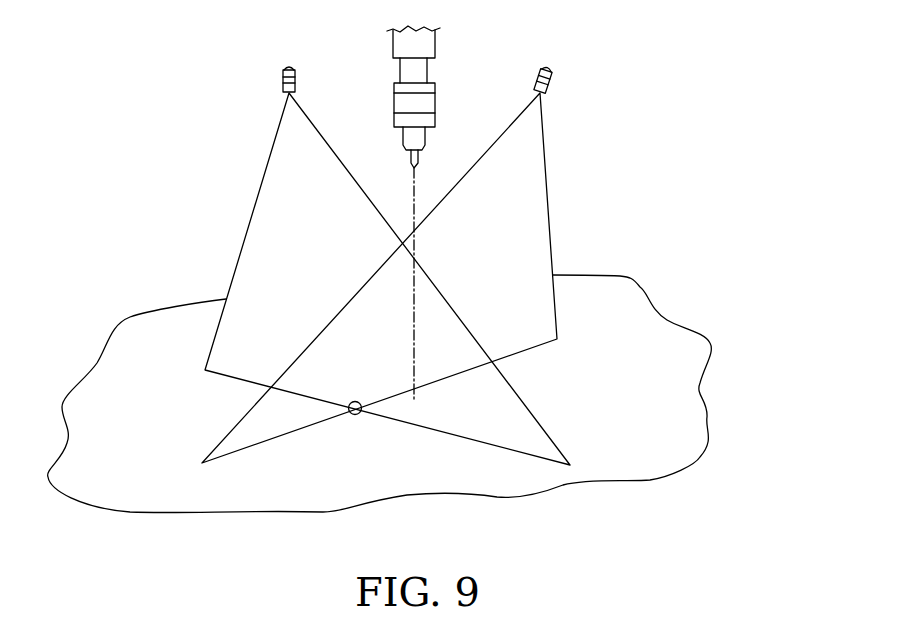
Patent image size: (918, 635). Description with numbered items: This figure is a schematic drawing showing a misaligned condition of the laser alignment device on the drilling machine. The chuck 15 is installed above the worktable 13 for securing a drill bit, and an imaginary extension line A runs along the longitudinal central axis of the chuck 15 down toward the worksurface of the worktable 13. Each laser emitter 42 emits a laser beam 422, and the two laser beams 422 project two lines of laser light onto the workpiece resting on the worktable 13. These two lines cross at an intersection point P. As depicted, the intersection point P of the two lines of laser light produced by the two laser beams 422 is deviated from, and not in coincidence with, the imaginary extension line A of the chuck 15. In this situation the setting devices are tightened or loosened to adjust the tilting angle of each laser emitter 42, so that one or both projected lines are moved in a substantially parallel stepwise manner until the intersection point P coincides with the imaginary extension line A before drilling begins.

The machining tool / spindle 15 is at (417, 103).
The laser sensor 42 is at (282, 72).
The laser light sheet (fan beam) 422 is at (293, 250).
The tool axis A is at (443, 199).
The intersection point P is at (355, 415).
The workpiece 13 is at (670, 332).